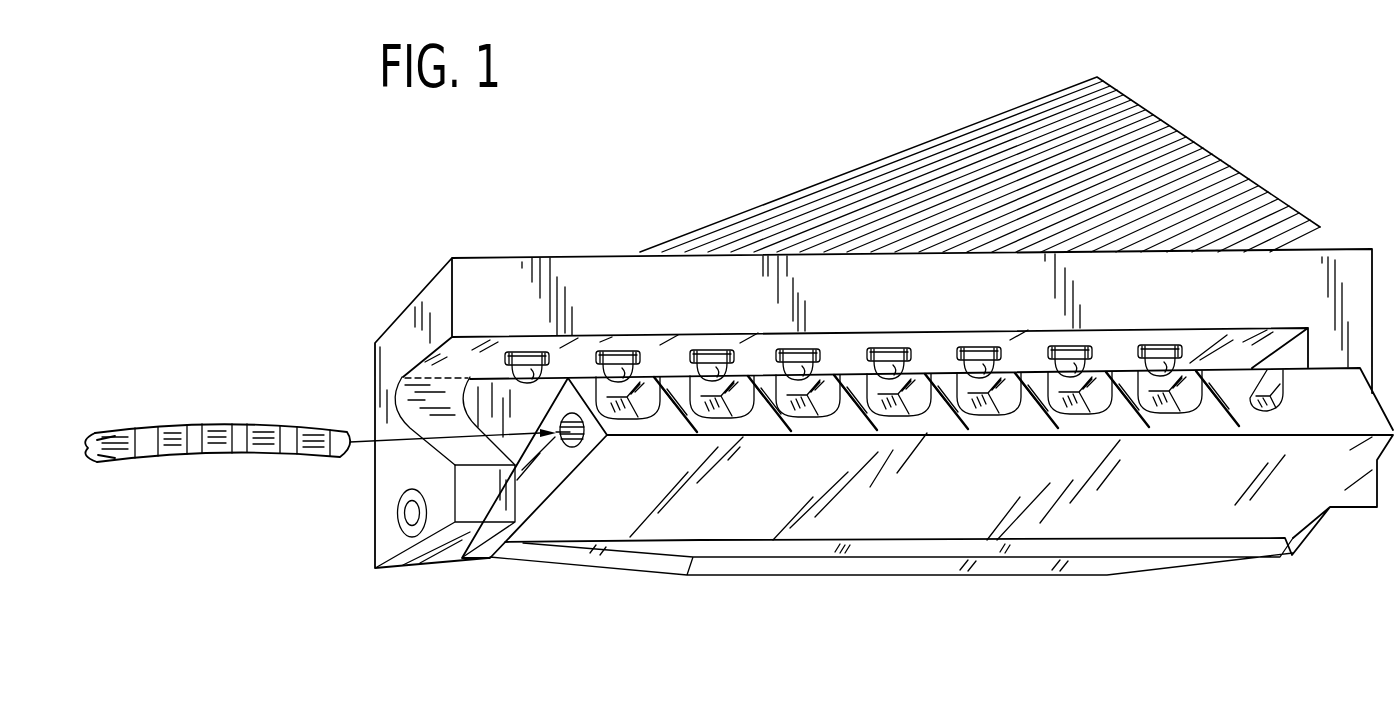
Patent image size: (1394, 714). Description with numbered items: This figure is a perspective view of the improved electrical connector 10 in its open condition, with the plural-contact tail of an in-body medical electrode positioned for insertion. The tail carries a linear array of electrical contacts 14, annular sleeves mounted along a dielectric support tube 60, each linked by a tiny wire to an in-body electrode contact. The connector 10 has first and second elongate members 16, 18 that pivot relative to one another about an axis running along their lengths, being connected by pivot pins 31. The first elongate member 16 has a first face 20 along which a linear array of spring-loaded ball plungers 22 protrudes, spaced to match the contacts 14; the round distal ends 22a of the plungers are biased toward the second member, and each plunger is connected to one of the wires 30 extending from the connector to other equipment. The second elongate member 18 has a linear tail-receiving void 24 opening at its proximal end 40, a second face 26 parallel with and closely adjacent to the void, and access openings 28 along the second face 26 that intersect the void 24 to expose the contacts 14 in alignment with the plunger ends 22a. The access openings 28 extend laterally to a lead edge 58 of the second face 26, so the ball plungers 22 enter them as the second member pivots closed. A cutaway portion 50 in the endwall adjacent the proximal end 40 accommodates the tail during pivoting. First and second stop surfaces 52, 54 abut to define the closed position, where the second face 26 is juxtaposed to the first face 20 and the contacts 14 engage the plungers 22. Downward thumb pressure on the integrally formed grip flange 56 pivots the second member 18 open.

The electrical connector 10 is at (368, 270).
The electrical contacts 14 is at (222, 427).
The first elongate member 16 is at (1340, 283).
The second elongate member 18 is at (1197, 507).
The first face 20 is at (598, 350).
The spring-loaded ball plungers 22 is at (622, 350).
The round distal ends 22a is at (702, 350).
The tail-receiving void 24 is at (422, 393).
The second face 26 is at (1298, 390).
The access openings 28 is at (875, 380).
The wires 30 is at (993, 132).
The pivot pins 31 is at (397, 520).
The proximal end 40 is at (547, 468).
The cutaway portion 50 is at (560, 417).
The first stop surface 52 is at (493, 410).
The second stop surface 54 is at (535, 350).
The grip flange 56 is at (720, 567).
The lead edge 58 is at (838, 372).
The dielectric support tube 60 is at (147, 452).